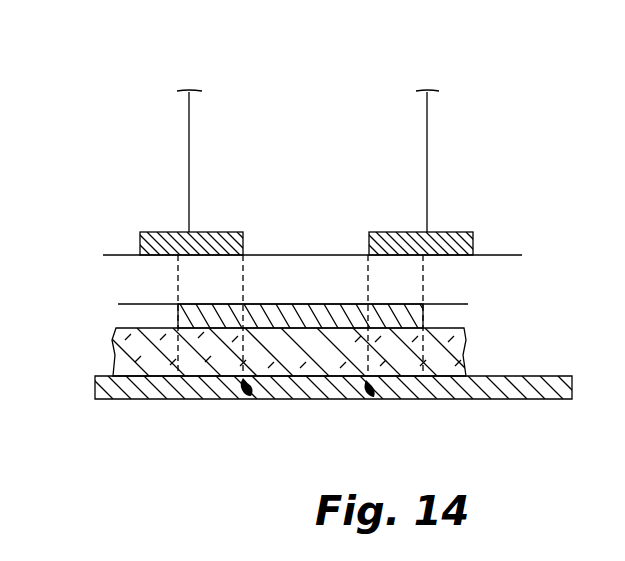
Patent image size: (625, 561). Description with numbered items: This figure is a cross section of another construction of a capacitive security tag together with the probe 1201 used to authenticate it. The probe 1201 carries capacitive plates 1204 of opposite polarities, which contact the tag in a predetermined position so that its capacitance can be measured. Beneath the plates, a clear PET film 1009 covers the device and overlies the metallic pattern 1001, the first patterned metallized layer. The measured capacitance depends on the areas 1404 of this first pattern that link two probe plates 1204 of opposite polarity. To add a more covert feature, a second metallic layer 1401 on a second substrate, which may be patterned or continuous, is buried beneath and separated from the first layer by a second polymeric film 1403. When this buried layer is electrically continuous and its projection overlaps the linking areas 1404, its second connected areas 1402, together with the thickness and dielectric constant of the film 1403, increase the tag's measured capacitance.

The probe 1201 is at (377, 105).
The capacitive plates 1204 is at (368, 232).
The clear PET film 1009 is at (172, 281).
The areas of the first patterned metallized area 1404 is at (387, 290).
The metallic pattern 1001 is at (437, 322).
The second polymeric film 1403 is at (335, 363).
The second metallic layer 1401 is at (92, 392).
The second connected areas 1402 is at (367, 386).